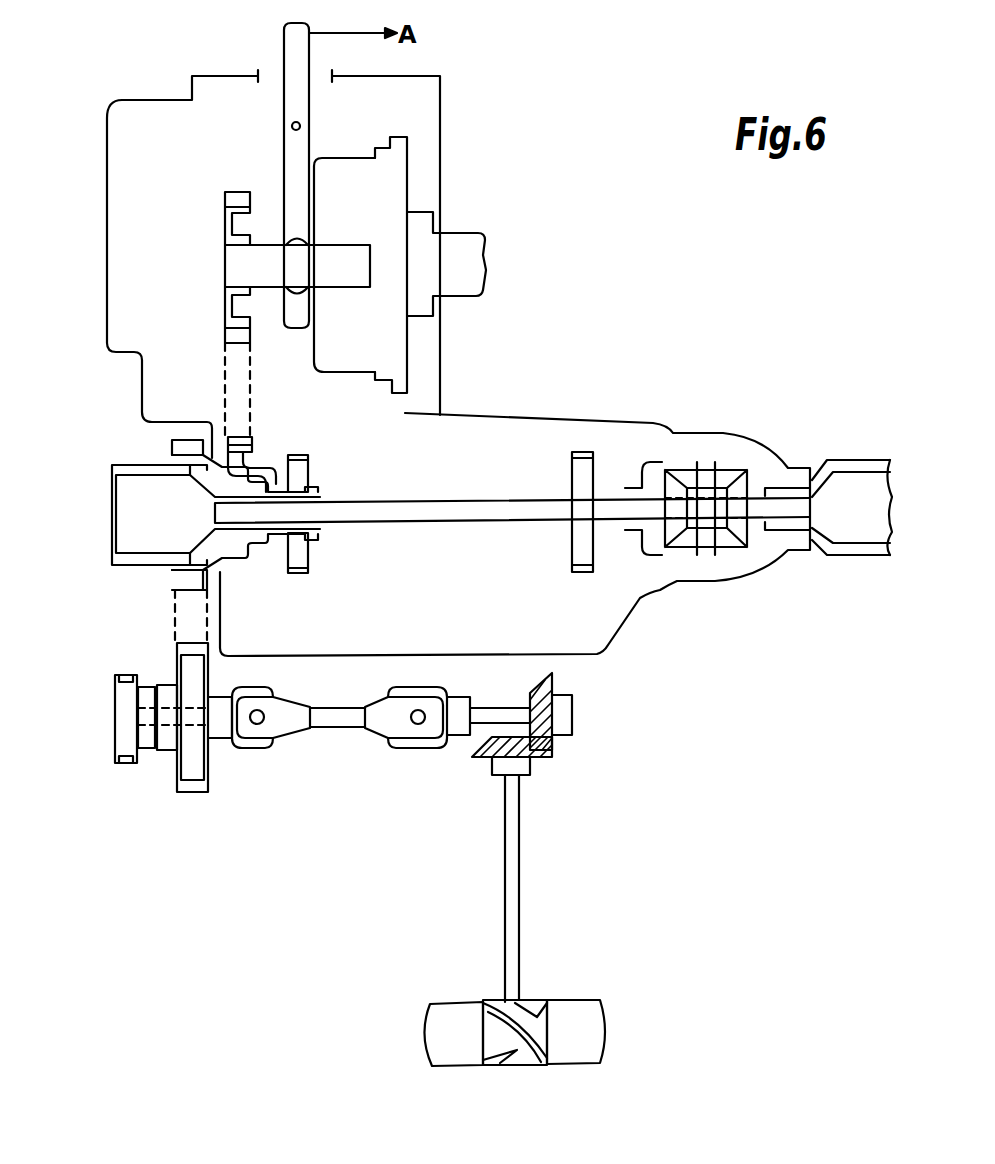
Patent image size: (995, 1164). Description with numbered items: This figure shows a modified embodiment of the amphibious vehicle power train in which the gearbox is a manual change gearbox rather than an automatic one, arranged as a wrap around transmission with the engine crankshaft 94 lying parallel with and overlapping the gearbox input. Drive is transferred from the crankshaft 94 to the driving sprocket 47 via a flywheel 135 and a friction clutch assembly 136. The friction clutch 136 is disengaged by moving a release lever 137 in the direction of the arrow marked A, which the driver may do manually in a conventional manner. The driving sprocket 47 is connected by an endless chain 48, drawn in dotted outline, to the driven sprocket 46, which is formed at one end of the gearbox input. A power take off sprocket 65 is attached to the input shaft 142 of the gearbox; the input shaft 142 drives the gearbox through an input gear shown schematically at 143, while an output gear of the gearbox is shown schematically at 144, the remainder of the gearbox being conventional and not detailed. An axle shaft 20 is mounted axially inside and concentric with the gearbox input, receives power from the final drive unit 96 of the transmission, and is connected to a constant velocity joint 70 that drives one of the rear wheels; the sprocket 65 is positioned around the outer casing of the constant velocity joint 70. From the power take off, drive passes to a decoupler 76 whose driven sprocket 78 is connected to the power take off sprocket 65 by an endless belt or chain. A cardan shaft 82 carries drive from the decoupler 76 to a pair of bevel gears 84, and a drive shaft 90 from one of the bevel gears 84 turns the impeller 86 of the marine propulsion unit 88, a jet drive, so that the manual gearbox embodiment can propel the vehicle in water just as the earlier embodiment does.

The axle shaft 20 is at (447, 505).
The driven sprocket 46 is at (250, 446).
The driving sprocket 47 is at (230, 333).
The endless chain 48 is at (225, 401).
The power take off sprocket 65 is at (178, 578).
The constant velocity joint 70 is at (120, 515).
The decoupler 76 is at (120, 718).
The driven sprocket 78 is at (192, 787).
The cardan shaft 82 is at (340, 717).
The bevel gears 84 is at (550, 690).
The impeller 86 is at (585, 1030).
The marine propulsion unit 88 is at (551, 865).
The drive shaft 90 is at (513, 910).
The crankshaft 94 is at (450, 252).
The final drive unit 96 is at (728, 540).
The flywheel 135 is at (395, 162).
The friction clutch assembly 136 is at (340, 170).
The release lever 137 is at (293, 95).
The input shaft 142 is at (300, 490).
The input gear 143 is at (302, 553).
The output gear 144 is at (580, 548).